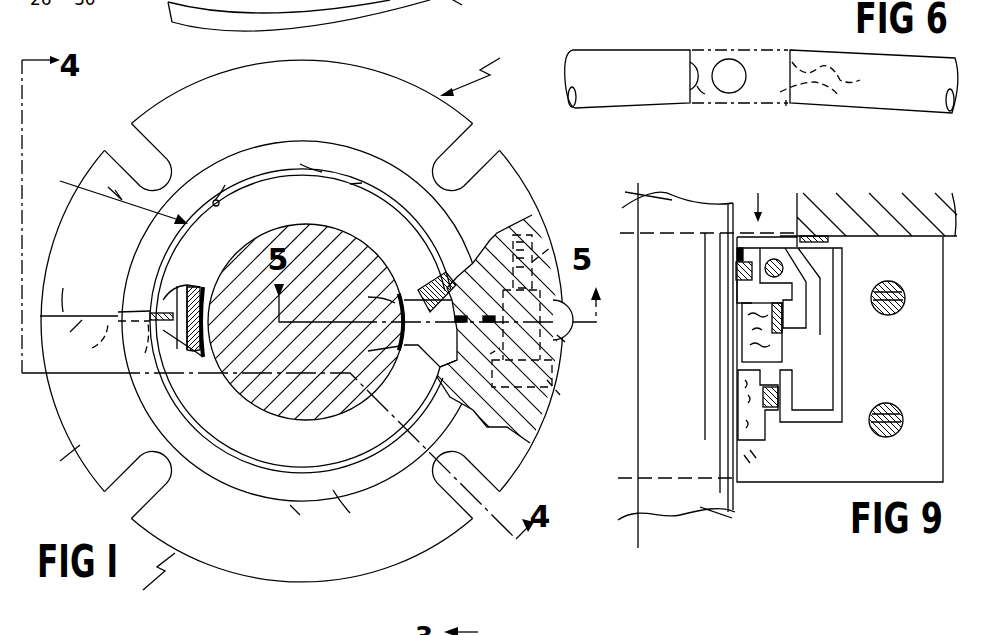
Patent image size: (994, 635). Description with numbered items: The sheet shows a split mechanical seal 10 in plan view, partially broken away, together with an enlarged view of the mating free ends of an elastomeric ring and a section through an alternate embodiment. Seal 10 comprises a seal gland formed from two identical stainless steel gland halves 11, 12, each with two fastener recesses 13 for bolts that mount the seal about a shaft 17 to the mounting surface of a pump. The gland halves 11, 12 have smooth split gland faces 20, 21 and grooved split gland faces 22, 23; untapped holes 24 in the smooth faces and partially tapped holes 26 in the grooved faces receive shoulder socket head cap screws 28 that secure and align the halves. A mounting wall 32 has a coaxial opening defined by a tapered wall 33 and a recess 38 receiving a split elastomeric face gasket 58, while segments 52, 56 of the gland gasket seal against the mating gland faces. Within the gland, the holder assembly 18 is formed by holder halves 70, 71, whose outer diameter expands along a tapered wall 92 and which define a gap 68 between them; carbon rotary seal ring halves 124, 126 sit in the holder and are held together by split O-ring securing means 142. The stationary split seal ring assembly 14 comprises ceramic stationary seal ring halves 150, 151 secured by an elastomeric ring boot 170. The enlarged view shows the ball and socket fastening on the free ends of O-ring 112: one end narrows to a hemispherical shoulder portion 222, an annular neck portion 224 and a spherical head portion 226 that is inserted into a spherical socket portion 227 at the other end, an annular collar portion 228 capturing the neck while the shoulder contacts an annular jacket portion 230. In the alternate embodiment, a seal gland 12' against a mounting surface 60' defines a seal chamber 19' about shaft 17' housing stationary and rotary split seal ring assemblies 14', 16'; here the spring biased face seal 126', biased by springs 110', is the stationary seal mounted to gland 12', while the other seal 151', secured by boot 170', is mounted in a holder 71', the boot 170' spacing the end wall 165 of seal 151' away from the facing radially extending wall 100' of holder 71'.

In FIG. 1, the mechanical seal 10 is at (481, 69).
In FIG. 1, the gland half 11 is at (148, 579).
In FIG. 1, the gland half 12 is at (302, 313).
In FIG. 1, the fastener recess 13 is at (132, 123).
In FIG. 1, the stationary split seal ring assembly 14 is at (463, 11).
In FIG. 1, the shaft 17 is at (304, 320).
In FIG. 1, the holder assembly 18 is at (108, 195).
In FIG. 1, the smooth split gland face 20 is at (62, 334).
In FIG. 1, the smooth split gland face 21 is at (556, 306).
In FIG. 1, the grooved split gland face 22 is at (66, 290).
In FIG. 1, the grooved split gland face 23 is at (571, 345).
In FIG. 1, the untapped hole 24 is at (483, 357).
In FIG. 1, the partially tapped hole 26 is at (534, 266).
In FIG. 1, the shoulder socket head cap screw 28 is at (545, 400).
In FIG. 1, the mounting wall 32 is at (56, 459).
In FIG. 1, the wall 33 is at (222, 186).
In FIG. 1, the recess 38 is at (304, 518).
In FIG. 1, the gland gasket segment 52 is at (100, 346).
In FIG. 1, the gland gasket segment 56 is at (148, 330).
In FIG. 1, the face gasket 58 is at (351, 511).
In FIG. 1, the gap 68 is at (153, 311).
In FIG. 1, the holder half 70 is at (168, 372).
In FIG. 1, the holder half 71 is at (244, 249).
In FIG. 1, the tapered wall 92 is at (368, 178).
In FIG. 1, the rotary seal ring half 124 is at (198, 333).
In FIG. 1, the rotary seal ring half 126 is at (193, 319).
In FIG. 1, the split O-ring securing means 142 is at (203, 289).
In FIG. 1, the stationary seal ring half 150 is at (368, 352).
In FIG. 1, the stationary seal ring half 151 is at (364, 296).
In FIG. 1, the ring boot securing means 170 is at (332, 156).
In FIG. 6, the O-ring 112 is at (605, 50).
In FIG. 6, the shoulder portion 222 is at (698, 96).
In FIG. 6, the neck portion 224 is at (707, 60).
In FIG. 6, the head portion 226 is at (733, 60).
In FIG. 6, the socket portion 227 is at (860, 80).
In FIG. 6, the collar portion 228 is at (833, 93).
In FIG. 6, the jacket portion 230 is at (786, 103).
In FIG. 9, the seal gland 12' is at (840, 377).
In FIG. 9, the stationary split seal ring assembly 14' is at (799, 428).
In FIG. 9, the rotary split seal ring assembly 16' is at (831, 291).
In FIG. 9, the shaft 17' is at (685, 370).
In FIG. 9, the seal chamber 19' is at (821, 335).
In FIG. 9, the housing flange 60' is at (876, 229).
In FIG. 9, the holder 71' is at (681, 253).
In FIG. 9, the radially extending wall 100' is at (707, 295).
In FIG. 9, the springs 110' is at (757, 383).
In FIG. 9, the spring biased face seal 126' is at (720, 416).
In FIG. 9, the seal 151' is at (720, 332).
In FIG. 9, the end wall 165 is at (752, 295).
In FIG. 9, the boot 170' is at (826, 331).